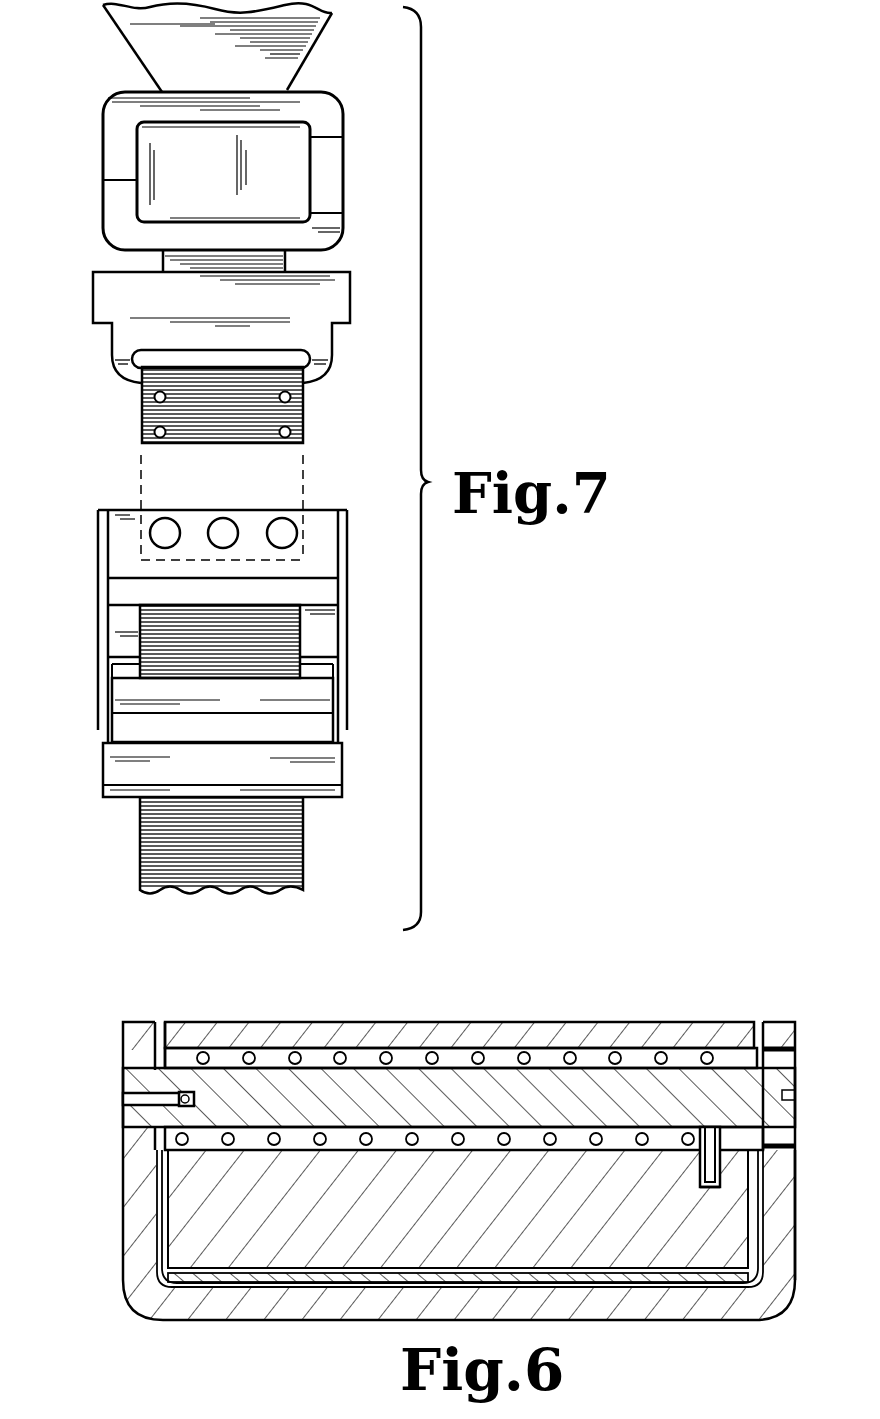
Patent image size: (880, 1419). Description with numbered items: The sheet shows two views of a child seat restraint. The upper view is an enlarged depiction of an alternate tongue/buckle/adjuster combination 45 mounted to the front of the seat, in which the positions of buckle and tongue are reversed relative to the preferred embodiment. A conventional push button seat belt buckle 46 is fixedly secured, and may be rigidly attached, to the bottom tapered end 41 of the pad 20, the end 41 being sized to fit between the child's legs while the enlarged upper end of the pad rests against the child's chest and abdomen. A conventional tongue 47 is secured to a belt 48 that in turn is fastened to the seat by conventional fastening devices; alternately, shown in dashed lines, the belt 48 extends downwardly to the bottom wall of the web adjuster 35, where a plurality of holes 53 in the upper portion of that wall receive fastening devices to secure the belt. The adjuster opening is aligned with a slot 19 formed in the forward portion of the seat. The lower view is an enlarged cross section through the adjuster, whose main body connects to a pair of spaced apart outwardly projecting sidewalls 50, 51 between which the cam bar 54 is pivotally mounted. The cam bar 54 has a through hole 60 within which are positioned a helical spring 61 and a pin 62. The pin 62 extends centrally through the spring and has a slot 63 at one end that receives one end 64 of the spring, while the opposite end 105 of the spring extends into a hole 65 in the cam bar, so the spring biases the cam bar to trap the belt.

In FIG. 7, the pad 20 is at (285, 59).
In FIG. 7, the bottom tapered end of pad 41 is at (280, 80).
In FIG. 7, the push button seat belt buckle 46 is at (328, 173).
In FIG. 7, the tongue 47 is at (335, 285).
In FIG. 7, the tongue/buckle/adjuster combination 45 is at (80, 381).
In FIG. 7, the belt 48 is at (287, 420).
In FIG. 7, the holes 53 is at (297, 528).
In FIG. 7, the slot 19 is at (221, 674).
In FIG. 7, the web adjuster 35 is at (102, 614).
In FIG. 6, the one end of the spring 64 is at (182, 1090).
In FIG. 6, the slot 63 is at (153, 1098).
In FIG. 6, the through hole 60 is at (597, 1047).
In FIG. 6, the cam bar 54 is at (645, 1030).
In FIG. 6, the helical spring 61 is at (707, 1052).
In FIG. 6, the pin 62 is at (745, 1090).
In FIG. 6, the opposite end of the spring 105 is at (712, 1170).
In FIG. 6, the hole 65 is at (722, 1181).
In FIG. 6, the sidewall 50 is at (140, 1212).
In FIG. 6, the sidewall 51 is at (785, 1238).